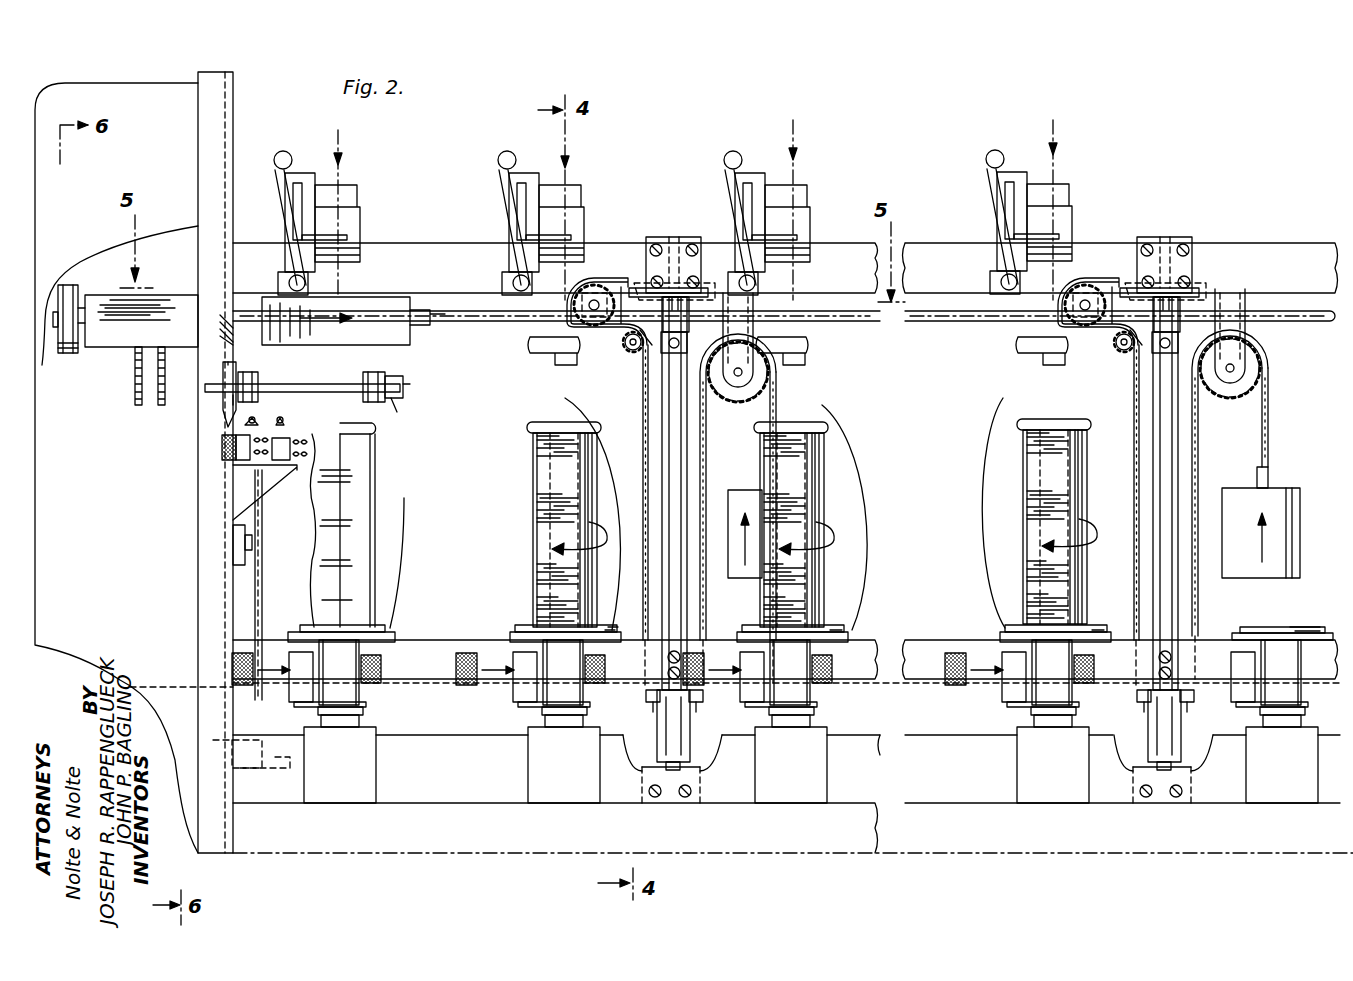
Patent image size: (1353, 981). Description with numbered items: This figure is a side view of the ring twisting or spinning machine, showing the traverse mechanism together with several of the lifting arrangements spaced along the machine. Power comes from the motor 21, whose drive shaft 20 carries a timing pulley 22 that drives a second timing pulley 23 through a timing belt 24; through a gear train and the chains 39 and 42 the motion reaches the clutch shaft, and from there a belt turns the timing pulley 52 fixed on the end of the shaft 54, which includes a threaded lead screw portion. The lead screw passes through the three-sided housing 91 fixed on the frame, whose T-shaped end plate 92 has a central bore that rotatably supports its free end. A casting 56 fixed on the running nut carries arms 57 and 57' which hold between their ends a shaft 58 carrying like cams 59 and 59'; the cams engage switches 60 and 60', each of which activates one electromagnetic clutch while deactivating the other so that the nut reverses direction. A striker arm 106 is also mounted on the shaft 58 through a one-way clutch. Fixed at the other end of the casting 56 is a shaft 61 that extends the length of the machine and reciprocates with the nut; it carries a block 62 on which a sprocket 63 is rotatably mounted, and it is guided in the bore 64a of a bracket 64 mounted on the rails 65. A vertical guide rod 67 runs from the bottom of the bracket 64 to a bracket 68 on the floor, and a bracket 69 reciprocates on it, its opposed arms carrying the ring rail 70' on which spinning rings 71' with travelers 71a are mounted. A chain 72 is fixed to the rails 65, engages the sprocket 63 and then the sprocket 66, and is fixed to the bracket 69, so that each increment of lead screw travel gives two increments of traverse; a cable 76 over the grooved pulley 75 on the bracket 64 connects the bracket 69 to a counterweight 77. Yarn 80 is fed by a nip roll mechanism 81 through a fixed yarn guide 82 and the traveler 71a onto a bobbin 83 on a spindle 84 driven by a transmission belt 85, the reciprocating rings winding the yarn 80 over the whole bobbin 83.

The drive shaft 20 is at (240, 768).
The motor 21 is at (160, 687).
The timing pulley 22 is at (280, 768).
The timing pulley 23 is at (250, 545).
The timing belt 24 is at (262, 612).
The chain 39 is at (160, 405).
The chain 42 is at (136, 388).
The timing pulley 52 is at (72, 285).
The shaft 54 is at (46, 330).
The casting 56 is at (372, 302).
The arm 57 is at (148, 321).
The arm 57' is at (418, 377).
The shaft 58 is at (320, 380).
The cam 59 is at (267, 370).
The cam 59' is at (361, 370).
The switch 60 is at (213, 442).
The switch 60' is at (299, 430).
The shaft 61 is at (440, 311).
The block 62 is at (597, 283).
The sprocket 63 is at (620, 280).
The bracket 64 is at (648, 352).
The bore 64a is at (690, 285).
The rails 65 is at (662, 238).
The sprocket 66 is at (620, 352).
The vertical guide rod 67 is at (675, 500).
The bracket 68 is at (672, 800).
The bracket 69 is at (690, 740).
The ring rail 70' is at (786, 639).
The twisting or spinning ring 71' is at (816, 610).
The traveler 71a is at (388, 627).
The chain 72 is at (636, 272).
The grooved pulley 75 is at (742, 410).
The cable 76 is at (770, 432).
The counterweight 77 is at (748, 580).
The yarn 80 is at (342, 160).
The nip roll mechanism 81 is at (368, 201).
The fixed yarn guide 82 is at (555, 360).
The bobbin 83 is at (378, 428).
The spindle 84 is at (560, 487).
The transmission belt 85 is at (445, 690).
The three-sided housing 91 is at (168, 300).
The T-shaped end plate 92 is at (310, 318).
The striker arm 106 is at (222, 410).